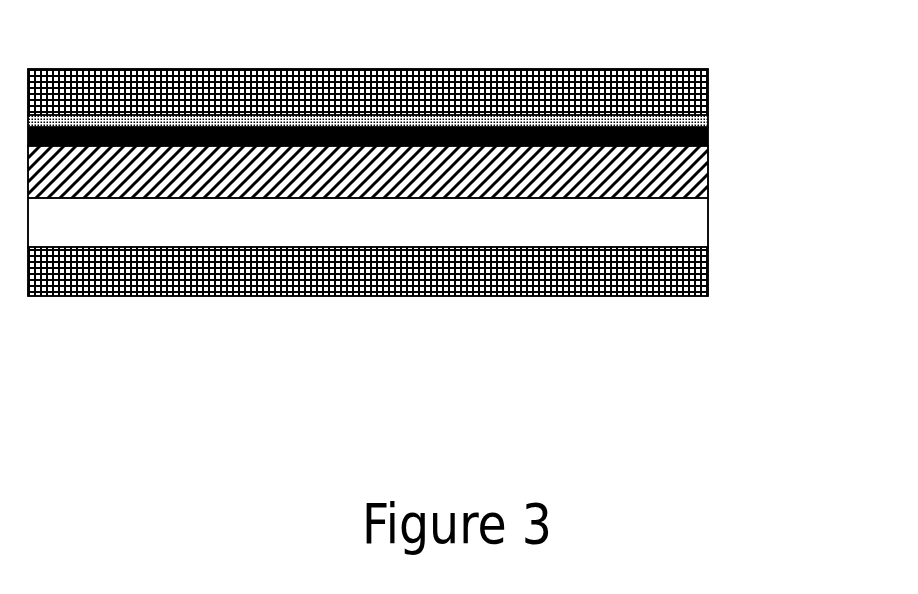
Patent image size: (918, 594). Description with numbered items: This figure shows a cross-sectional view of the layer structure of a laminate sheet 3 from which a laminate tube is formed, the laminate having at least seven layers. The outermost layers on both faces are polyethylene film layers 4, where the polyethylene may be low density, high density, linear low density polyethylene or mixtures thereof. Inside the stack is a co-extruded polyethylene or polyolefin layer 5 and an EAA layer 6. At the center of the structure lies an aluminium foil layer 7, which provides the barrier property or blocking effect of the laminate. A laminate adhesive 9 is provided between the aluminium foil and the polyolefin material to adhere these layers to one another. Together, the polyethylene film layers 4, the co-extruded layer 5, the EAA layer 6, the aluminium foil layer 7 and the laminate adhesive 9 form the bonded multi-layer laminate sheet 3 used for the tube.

The laminate sheet 3 is at (690, 69).
The polyethylene film layers 4 is at (708, 90).
The co-extruded polyethylene layer 5 is at (708, 225).
The EAA layer 6 is at (708, 177).
The aluminium foil layer 7 is at (708, 140).
The laminate adhesive 9 is at (708, 121).